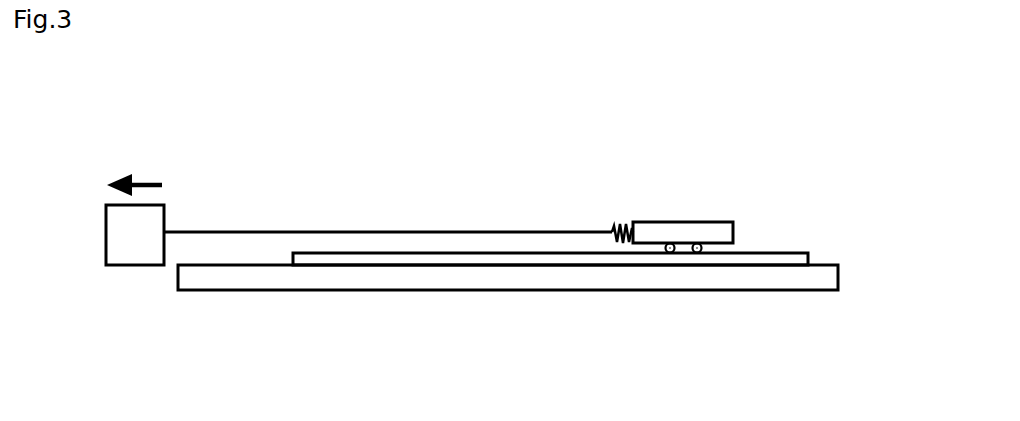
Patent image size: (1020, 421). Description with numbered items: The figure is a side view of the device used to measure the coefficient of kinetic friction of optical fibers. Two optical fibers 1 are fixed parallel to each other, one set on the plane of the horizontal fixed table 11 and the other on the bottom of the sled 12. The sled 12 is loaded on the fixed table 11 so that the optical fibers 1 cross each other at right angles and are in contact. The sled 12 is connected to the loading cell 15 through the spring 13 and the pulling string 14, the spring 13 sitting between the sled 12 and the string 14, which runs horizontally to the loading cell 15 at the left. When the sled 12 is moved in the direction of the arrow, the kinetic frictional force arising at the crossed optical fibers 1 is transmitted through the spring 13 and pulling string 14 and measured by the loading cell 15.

The optical fiber 1 is at (670, 253).
The horizontal fixed table 11 is at (442, 278).
The sled 12 is at (673, 225).
The spring 13 is at (613, 226).
The pulling string 14 is at (365, 233).
The loading cell 15 is at (139, 250).